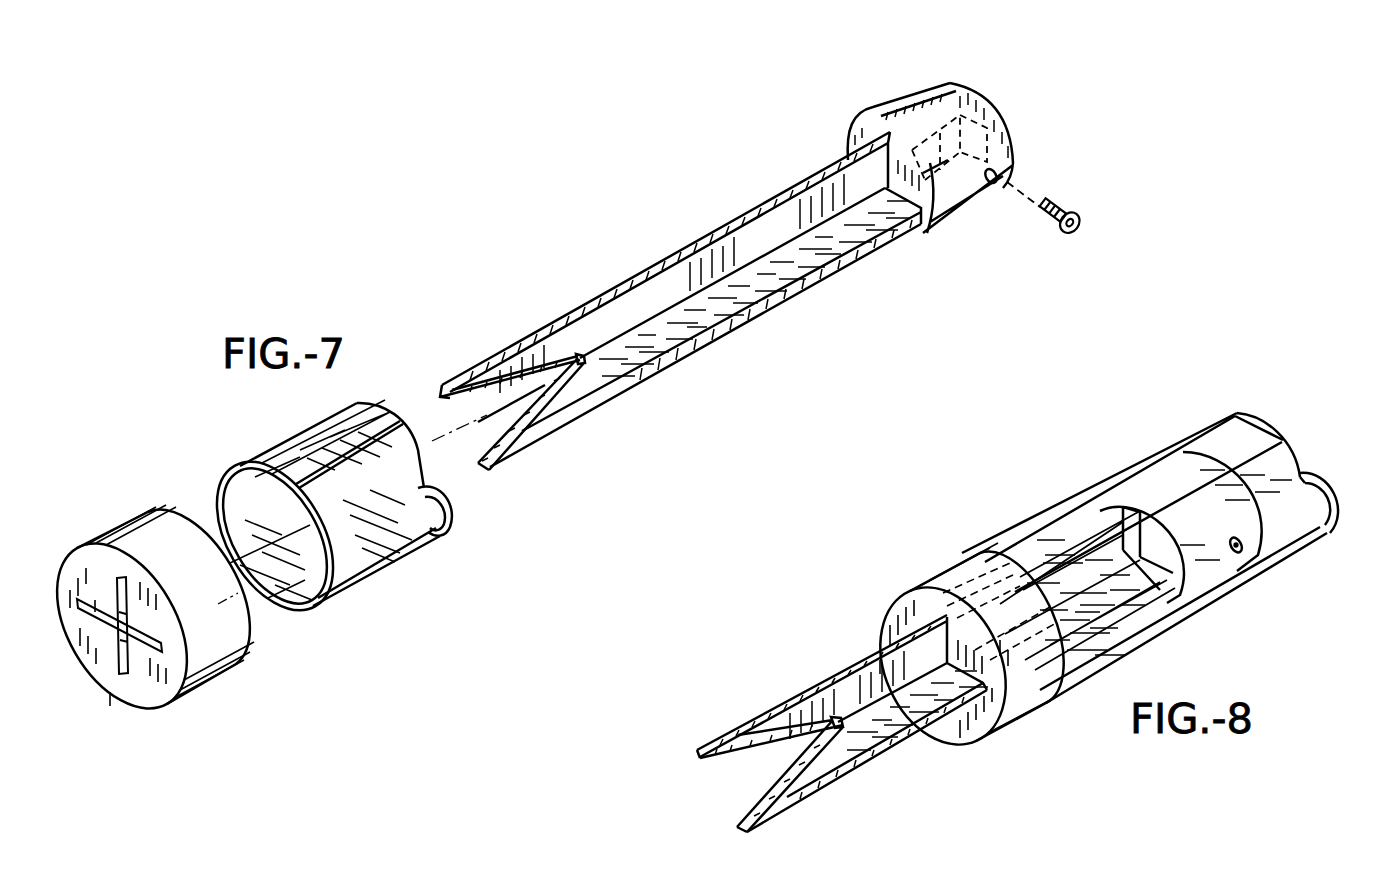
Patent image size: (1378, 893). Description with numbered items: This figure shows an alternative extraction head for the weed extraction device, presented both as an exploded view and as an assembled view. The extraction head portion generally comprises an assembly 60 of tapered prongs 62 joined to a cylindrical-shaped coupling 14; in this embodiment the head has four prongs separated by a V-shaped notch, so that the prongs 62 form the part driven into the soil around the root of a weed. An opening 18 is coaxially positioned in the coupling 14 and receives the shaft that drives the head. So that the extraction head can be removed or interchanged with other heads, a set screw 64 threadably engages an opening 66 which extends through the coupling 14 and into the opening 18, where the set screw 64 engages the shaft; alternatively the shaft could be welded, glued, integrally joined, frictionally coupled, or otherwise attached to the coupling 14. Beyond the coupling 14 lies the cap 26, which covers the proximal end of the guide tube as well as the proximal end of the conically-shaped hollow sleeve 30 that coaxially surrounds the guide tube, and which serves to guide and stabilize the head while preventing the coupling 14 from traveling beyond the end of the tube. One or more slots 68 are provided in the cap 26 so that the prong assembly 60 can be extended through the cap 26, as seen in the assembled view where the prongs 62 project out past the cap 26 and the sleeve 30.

In FIG. 7, the coupling 14 is at (892, 110).
In FIG. 8, the coupling 14 is at (1153, 468).
In FIG. 7, the opening 18 is at (977, 117).
In FIG. 7, the cap 26 is at (147, 512).
In FIG. 8, the cap 26 is at (913, 585).
In FIG. 7, the sleeve 30 is at (266, 451).
In FIG. 8, the sleeve 30 is at (1183, 623).
In FIG. 7, the assembly 60 is at (476, 325).
In FIG. 8, the assembly 60 is at (745, 685).
In FIG. 7, the tapered prongs 62 is at (437, 379).
In FIG. 8, the tapered prongs 62 is at (702, 742).
In FIG. 7, the set screw 64 is at (1067, 210).
In FIG. 8, the set screw 64 is at (1238, 554).
In FIG. 7, the opening 66 is at (970, 196).
In FIG. 7, the slots 68 is at (125, 668).